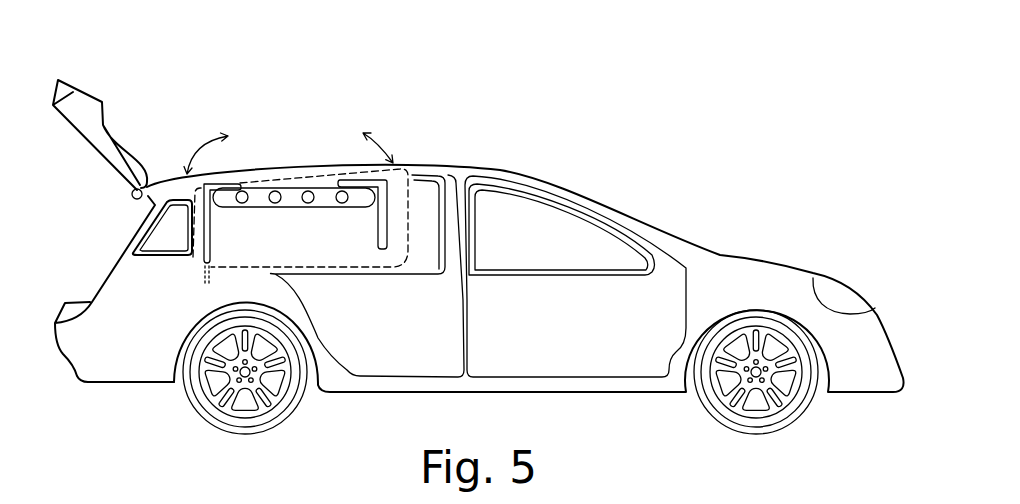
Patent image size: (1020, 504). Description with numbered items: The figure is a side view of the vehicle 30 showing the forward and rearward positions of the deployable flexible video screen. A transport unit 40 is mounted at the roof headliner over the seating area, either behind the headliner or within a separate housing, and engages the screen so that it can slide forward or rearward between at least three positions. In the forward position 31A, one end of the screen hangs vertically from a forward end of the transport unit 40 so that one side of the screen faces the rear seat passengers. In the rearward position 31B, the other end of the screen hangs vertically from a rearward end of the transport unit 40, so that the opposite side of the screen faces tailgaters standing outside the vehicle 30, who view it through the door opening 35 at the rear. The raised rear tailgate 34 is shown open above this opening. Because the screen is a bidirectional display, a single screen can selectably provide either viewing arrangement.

The vehicle 30 is at (699, 253).
The tailgate 34 is at (84, 99).
The door opening 35 is at (97, 283).
The forward position 31A is at (385, 227).
The rearward position 31B is at (203, 240).
The transport unit 40 is at (334, 213).